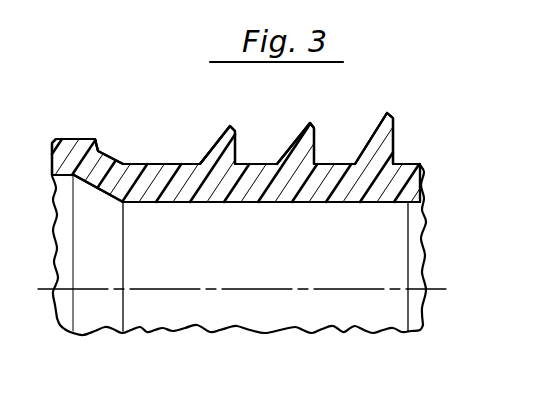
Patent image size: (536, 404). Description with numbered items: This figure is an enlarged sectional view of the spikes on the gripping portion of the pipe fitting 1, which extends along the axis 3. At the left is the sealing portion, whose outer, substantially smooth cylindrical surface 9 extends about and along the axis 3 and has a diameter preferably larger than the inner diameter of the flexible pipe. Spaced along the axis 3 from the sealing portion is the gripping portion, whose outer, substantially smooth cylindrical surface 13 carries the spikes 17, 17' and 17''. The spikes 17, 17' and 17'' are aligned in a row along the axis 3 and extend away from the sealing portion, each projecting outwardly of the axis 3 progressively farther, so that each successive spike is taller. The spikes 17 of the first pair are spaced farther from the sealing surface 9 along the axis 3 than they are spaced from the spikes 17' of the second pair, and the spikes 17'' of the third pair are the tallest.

The pipe fitting 1 is at (131, 77).
The axis 3 is at (233, 289).
The outer cylindrical surface of the sealing portion 9 is at (73, 139).
The outer cylindrical surface of the gripping portion 13 is at (164, 163).
The spikes of the first pair 17 is at (210, 121).
The spikes of the second pair 17' is at (288, 121).
The spikes of the third pair 17'' is at (364, 121).